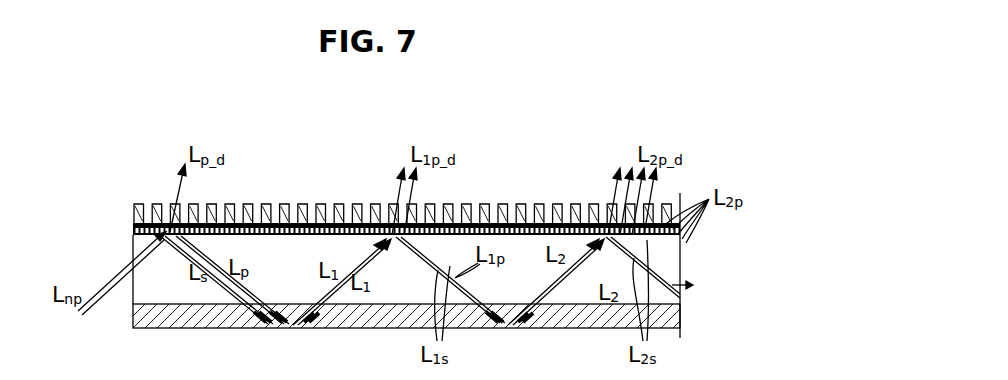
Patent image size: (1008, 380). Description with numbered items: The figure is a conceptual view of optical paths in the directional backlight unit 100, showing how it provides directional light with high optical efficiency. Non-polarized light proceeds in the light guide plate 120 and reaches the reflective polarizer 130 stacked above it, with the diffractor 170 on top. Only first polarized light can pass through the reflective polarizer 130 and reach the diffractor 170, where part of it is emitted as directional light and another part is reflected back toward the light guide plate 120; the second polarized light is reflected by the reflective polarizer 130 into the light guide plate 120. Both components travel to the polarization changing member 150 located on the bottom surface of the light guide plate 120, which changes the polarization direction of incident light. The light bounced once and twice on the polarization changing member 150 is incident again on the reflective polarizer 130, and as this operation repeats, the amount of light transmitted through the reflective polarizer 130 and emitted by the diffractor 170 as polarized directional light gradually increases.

The directional backlight unit 100 is at (710, 153).
The diffractor 170 is at (133, 207).
The reflective polarizer 130 is at (133, 232).
The light guide plate 120 is at (133, 288).
The polarization changing member 150 is at (164, 327).